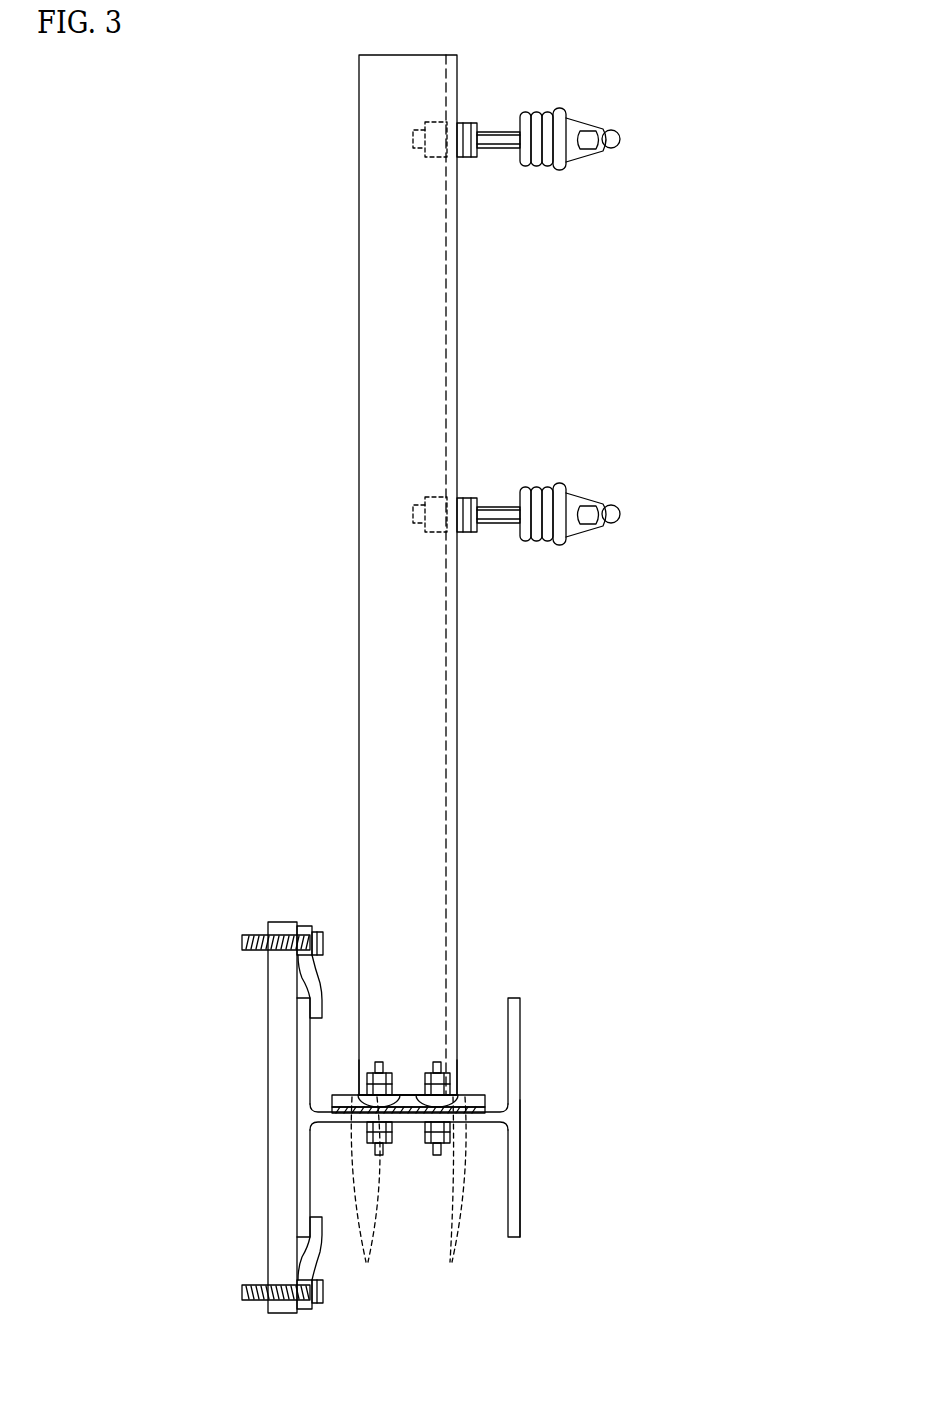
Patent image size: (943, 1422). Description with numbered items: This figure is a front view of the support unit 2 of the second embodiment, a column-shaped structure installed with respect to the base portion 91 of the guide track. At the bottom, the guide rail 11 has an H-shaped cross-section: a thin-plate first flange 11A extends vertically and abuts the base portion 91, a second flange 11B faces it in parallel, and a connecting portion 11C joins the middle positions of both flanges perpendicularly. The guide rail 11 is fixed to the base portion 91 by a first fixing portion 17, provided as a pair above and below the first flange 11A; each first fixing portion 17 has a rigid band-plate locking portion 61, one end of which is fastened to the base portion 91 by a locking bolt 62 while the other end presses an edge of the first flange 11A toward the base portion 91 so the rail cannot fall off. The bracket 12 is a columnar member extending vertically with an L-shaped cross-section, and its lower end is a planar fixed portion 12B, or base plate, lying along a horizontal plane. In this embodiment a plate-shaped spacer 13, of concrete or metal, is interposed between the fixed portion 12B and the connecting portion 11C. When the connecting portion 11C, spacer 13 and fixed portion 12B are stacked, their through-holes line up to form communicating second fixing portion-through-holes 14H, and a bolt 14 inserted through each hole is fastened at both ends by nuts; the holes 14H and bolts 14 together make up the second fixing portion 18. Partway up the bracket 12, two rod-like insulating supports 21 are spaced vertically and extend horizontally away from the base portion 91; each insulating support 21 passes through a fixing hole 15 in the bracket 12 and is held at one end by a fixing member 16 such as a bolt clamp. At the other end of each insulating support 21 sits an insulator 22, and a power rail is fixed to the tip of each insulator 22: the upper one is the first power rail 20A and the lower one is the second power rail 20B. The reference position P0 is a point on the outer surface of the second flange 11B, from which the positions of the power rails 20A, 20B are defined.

The support unit 2 is at (182, 170).
The guide rail 11 is at (514, 1232).
The first flange 11A is at (303, 1043).
The second flange 11B is at (515, 1025).
The connecting portion 11C is at (475, 1120).
The bracket 12 is at (359, 92).
The fixed portion 12B is at (408, 1097).
The spacer 13 is at (468, 1108).
The bolt 14 is at (392, 1140).
The second fixing portion-through-hole 14H is at (413, 1198).
The fixing hole 15 is at (454, 125).
The fixing member 16 is at (427, 147).
The first fixing portion 17 is at (353, 843).
The second fixing portion 18 is at (450, 1222).
The first power rail 20A is at (616, 147).
The second power rail 20B is at (616, 522).
The insulating support 21 is at (580, 84).
The insulator 22 is at (525, 170).
The locking portion 61 is at (303, 924).
The locking bolt 62 is at (323, 940).
The base portion 91 is at (277, 930).
The reference position P0 is at (520, 1180).